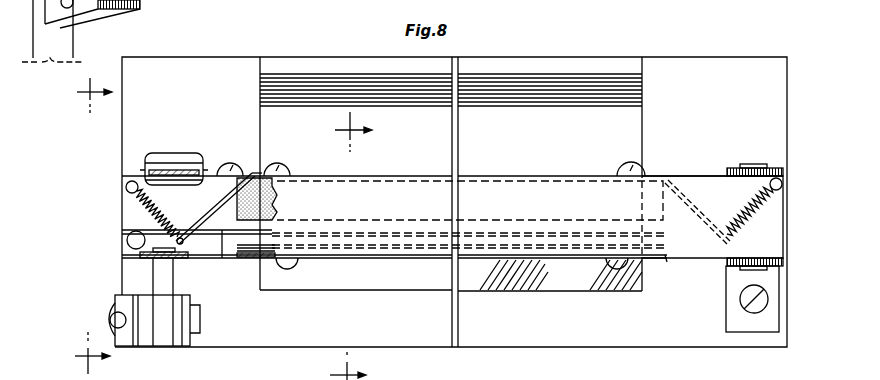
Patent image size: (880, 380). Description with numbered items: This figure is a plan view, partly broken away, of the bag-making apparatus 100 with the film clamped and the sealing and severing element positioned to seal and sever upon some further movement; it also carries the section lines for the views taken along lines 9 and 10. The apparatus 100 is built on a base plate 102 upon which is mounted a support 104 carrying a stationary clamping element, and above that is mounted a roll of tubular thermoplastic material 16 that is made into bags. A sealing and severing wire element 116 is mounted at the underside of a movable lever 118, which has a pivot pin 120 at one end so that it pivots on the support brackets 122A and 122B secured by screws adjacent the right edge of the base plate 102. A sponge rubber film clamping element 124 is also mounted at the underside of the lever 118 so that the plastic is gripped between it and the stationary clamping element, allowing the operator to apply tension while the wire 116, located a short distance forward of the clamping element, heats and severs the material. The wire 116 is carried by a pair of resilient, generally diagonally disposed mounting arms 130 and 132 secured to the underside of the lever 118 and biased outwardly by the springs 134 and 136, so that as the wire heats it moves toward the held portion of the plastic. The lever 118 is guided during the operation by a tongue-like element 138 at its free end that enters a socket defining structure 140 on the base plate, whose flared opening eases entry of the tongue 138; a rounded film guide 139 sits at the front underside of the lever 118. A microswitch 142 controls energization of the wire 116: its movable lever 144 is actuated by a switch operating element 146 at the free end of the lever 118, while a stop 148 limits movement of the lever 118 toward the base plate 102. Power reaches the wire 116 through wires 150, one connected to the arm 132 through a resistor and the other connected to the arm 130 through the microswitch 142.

The apparatus 100 is at (590, 47).
The base plate 102 is at (126, 108).
The support 104 is at (128, 213).
The sealing and severing wire element 116 is at (224, 254).
The movable lever 118 is at (692, 258).
The pivot pin 120 is at (757, 165).
The support bracket 122A is at (728, 167).
The support bracket 122B is at (727, 266).
The sponge rubber film clamping element 124 is at (263, 203).
The mounting arm 130 is at (208, 198).
The mounting arm 132 is at (678, 183).
The spring 134 is at (133, 200).
The spring 136 is at (747, 194).
The tongue-like element 138 is at (165, 168).
The rounded film guide 139 is at (247, 260).
The socket defining structure 140 is at (157, 152).
The microswitch 142 is at (182, 340).
The movable lever 144 is at (162, 338).
The switch operating element 146 is at (140, 263).
The stop 148 is at (127, 240).
The wires 150 is at (81, 45).
The roll of tubular thermoplastic material 16 is at (342, 57).
The section line 9- 9 is at (89, 226).
The section line 10- 10 is at (363, 246).